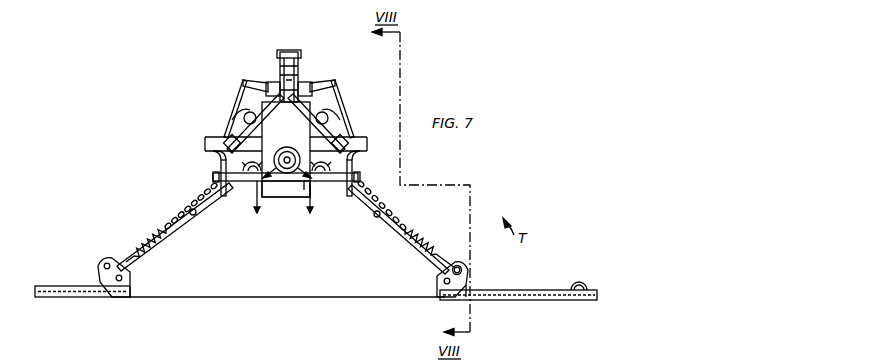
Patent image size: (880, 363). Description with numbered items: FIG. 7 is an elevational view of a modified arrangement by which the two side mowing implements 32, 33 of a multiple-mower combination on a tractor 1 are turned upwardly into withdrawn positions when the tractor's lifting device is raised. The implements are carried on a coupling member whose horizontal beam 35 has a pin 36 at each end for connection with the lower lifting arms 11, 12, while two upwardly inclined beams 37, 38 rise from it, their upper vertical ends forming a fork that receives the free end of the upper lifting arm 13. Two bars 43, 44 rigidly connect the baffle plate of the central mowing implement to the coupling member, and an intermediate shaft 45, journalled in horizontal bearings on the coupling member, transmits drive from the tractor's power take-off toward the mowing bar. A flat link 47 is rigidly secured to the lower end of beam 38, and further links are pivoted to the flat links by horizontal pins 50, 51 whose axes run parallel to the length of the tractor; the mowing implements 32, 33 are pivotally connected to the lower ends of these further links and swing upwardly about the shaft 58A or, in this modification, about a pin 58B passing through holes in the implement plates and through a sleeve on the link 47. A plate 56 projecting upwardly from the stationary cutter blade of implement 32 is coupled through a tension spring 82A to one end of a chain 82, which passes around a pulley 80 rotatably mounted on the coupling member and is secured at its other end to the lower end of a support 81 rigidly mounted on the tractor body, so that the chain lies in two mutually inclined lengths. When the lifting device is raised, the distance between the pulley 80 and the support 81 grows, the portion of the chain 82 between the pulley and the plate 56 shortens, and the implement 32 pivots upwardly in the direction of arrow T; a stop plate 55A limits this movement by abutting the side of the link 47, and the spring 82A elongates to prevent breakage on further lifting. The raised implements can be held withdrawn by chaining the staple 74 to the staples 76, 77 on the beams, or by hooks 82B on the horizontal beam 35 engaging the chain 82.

The tractor 1 is at (203, 143).
The lower lifting arm 11 is at (358, 174).
The lower lifting arm 12 is at (214, 174).
The upper lifting arm 13 is at (291, 73).
The mowing implement 32 is at (508, 287).
The mowing implement 33 is at (73, 284).
The horizontal beam 35 is at (242, 184).
The pin 36 is at (204, 182).
The upwardly inclined beam 37 is at (242, 118).
The upwardly inclined beam 38 is at (334, 118).
The bar 43 is at (336, 136).
The bar 44 is at (240, 134).
The intermediate shaft 45 is at (286, 189).
The flat link 47 is at (400, 246).
The horizontal pin 50 is at (374, 219).
The horizontal pin 51 is at (196, 218).
The stop plate 55A is at (462, 274).
The plate 56 is at (464, 260).
The shaft 58A is at (130, 278).
The pin 58B is at (439, 280).
The staple 74 is at (582, 284).
The staple 76 is at (337, 102).
The staple 77 is at (236, 99).
The pulley 80 is at (300, 149).
The support 81 is at (309, 216).
The chain 82 is at (395, 217).
The tension spring 82A is at (427, 240).
The hook 82B is at (256, 210).